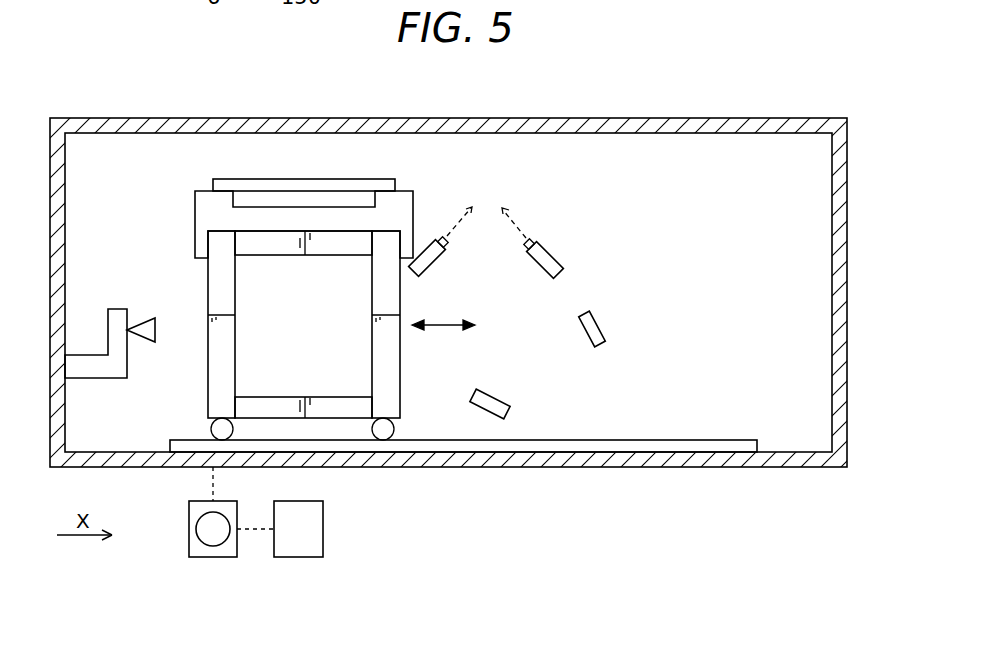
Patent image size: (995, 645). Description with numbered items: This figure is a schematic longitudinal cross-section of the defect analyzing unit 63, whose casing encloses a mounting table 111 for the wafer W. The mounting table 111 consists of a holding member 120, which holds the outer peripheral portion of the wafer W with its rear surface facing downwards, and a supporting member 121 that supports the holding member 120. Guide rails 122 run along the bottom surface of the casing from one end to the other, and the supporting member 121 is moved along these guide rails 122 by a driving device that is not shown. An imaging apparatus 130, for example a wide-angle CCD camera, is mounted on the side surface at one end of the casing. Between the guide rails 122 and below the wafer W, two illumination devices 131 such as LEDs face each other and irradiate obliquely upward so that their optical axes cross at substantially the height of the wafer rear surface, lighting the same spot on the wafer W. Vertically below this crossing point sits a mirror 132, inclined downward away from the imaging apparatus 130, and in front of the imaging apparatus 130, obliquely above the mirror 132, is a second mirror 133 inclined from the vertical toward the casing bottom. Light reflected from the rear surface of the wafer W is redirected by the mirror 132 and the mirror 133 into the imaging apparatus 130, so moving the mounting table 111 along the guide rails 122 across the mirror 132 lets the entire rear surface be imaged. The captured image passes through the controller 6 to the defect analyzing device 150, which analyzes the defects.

The defect analyzing unit 63 is at (516, 118).
The mounting table 111 is at (192, 190).
The holding member 120 is at (195, 225).
The supporting member 121 is at (206, 390).
The wafer W is at (395, 180).
The imaging apparatus 130 is at (118, 309).
The illumination devices 131 is at (430, 267).
The mirror 132 is at (500, 396).
The mirror 133 is at (601, 319).
The guide rails 122 is at (661, 440).
The controller 6 is at (215, 557).
The defect analyzing device 150 is at (300, 557).